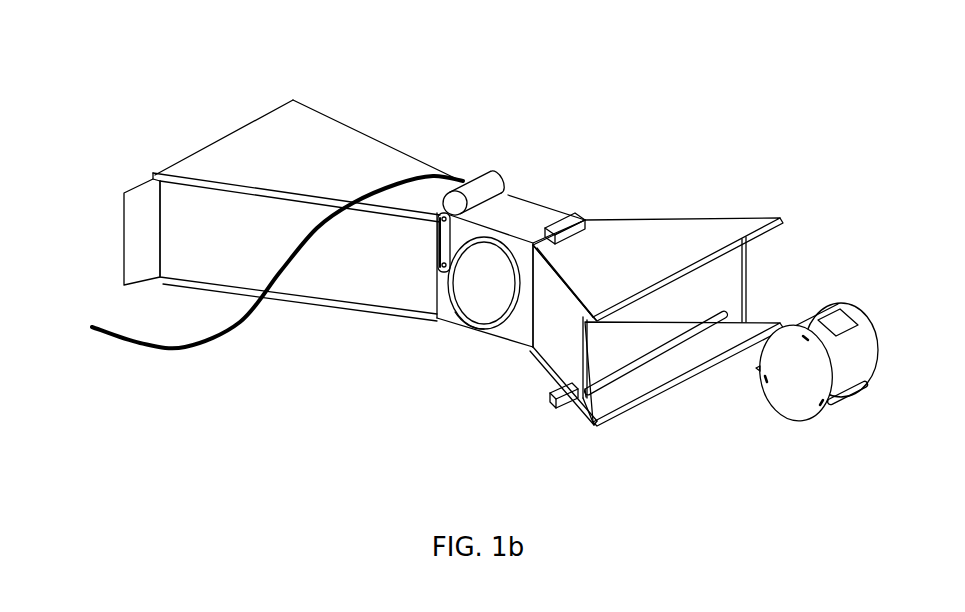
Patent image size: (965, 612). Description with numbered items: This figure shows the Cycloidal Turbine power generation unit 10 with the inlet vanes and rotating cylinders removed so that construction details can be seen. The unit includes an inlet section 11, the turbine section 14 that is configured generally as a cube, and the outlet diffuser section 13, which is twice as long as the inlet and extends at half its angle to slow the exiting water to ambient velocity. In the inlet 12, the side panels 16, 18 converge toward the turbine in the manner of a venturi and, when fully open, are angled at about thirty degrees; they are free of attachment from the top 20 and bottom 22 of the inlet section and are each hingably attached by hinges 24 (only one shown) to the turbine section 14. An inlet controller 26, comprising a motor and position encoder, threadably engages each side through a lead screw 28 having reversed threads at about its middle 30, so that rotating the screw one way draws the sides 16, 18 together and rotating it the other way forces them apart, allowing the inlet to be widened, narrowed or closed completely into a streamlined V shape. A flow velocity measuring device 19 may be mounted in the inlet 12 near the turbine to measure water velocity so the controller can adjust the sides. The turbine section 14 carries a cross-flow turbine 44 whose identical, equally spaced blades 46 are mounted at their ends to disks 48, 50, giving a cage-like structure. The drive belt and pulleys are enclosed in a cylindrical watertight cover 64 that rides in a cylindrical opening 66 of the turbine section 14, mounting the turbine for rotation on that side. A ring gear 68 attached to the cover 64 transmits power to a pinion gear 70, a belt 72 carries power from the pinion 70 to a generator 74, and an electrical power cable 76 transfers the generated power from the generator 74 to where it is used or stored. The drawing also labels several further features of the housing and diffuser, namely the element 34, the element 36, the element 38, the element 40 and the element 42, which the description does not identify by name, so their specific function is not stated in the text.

The Cycloidal Turbine power generation unit 10 is at (665, 148).
The inlet section 11 is at (753, 212).
The inlet 12 is at (695, 301).
The outlet diffuser section 13 is at (308, 84).
The turbine section 14 is at (528, 190).
The inlet side panel 16 is at (563, 352).
The inlet side panel 18 is at (747, 273).
The flow velocity measuring device 19 is at (585, 228).
The top of the inlet section 20 is at (675, 232).
The bottom of the inlet section 22 is at (670, 385).
The hinge 24 is at (533, 347).
The inlet controller 26 is at (567, 406).
The lead screw 28 is at (680, 343).
The middle of the lead screw 30 is at (660, 357).
The side flange 34 is at (233, 260).
The roof 36 is at (397, 150).
The roof panel 38 is at (306, 164).
The housing box 40 is at (292, 303).
The bottom edge 42 is at (437, 318).
The cross-flow turbine 44 is at (822, 379).
The blade 46 is at (865, 378).
The disk 48 is at (777, 412).
The disk 50 is at (848, 333).
The cylindrical watertight cover 64 is at (462, 290).
The cylindrical opening 66 is at (457, 312).
The ring gear 68 is at (485, 296).
The pinion gear 70 is at (437, 222).
The belt 72 is at (437, 220).
The generator 74 is at (510, 170).
The electrical power cable 76 is at (205, 347).